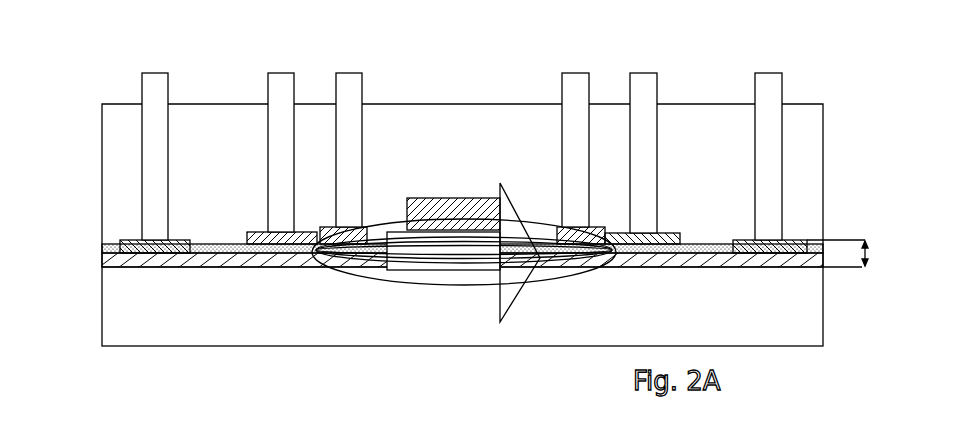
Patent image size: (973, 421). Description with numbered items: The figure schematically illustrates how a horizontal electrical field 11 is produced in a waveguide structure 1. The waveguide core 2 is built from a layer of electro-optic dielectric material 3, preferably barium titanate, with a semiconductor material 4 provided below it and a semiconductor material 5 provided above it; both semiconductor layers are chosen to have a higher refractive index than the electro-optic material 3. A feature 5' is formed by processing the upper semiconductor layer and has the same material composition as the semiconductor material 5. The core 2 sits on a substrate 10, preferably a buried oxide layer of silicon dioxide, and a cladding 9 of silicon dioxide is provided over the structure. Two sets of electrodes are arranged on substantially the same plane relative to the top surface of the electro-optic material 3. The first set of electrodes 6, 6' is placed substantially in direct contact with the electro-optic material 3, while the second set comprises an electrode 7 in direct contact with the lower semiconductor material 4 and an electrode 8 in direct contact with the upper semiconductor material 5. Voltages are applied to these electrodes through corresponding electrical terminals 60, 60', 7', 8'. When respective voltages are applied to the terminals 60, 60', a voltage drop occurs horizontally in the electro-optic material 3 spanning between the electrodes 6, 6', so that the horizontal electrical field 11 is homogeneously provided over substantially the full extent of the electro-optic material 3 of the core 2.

The waveguide structure 1 is at (895, 122).
The core 2 is at (872, 253).
The electro-optic dielectric material 3 is at (823, 243).
The semiconductor material 4 is at (823, 268).
The semiconductor material 5 is at (464, 234).
The feature 5' is at (453, 188).
The electrode 6 is at (270, 205).
The electrode 6' is at (655, 220).
The electrode 7 is at (459, 201).
The electrical terminal 7' is at (480, 130).
The electrode 8 is at (464, 213).
The electrical terminal 8' is at (462, 140).
The cladding 9 is at (807, 158).
The substrate 10 is at (113, 315).
The horizontal electrical field 11 is at (483, 283).
The electrical terminal 60 is at (291, 129).
The electrical terminal 60' is at (653, 137).